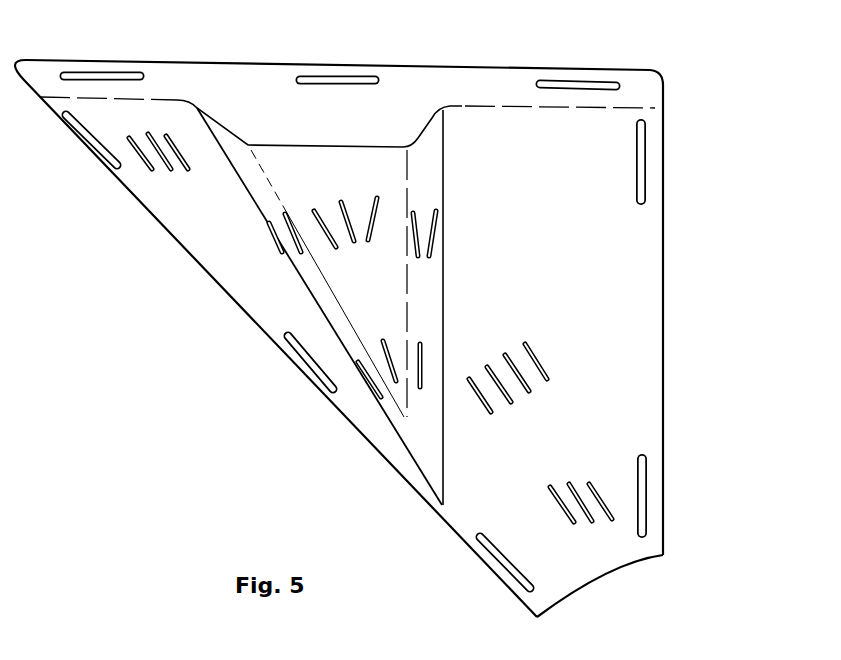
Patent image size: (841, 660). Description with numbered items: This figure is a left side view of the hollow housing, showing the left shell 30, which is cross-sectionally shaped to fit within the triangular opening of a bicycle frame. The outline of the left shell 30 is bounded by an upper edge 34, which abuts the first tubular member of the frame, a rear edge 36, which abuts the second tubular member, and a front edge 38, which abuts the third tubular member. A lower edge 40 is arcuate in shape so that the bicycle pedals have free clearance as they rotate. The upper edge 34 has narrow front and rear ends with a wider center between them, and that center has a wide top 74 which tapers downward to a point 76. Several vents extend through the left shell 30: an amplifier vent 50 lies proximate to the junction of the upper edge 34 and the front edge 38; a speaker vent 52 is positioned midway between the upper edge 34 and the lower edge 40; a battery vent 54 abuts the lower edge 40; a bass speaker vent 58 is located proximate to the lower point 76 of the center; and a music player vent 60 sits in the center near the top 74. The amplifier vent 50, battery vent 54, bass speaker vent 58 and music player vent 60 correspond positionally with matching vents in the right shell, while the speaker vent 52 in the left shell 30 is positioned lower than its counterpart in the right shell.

The left shell 30 is at (423, 88).
The upper edge 34 is at (218, 60).
The rear edge 36 is at (667, 237).
The front edge 38 is at (260, 337).
The lower edge 40 is at (588, 578).
The amplifier vent 50 is at (152, 160).
The speaker vent 52 is at (517, 372).
The battery vent 54 is at (583, 500).
The bass speaker vent 58 is at (390, 367).
The music player vent 60 is at (347, 232).
The top 74 is at (333, 115).
The point 76 is at (440, 508).